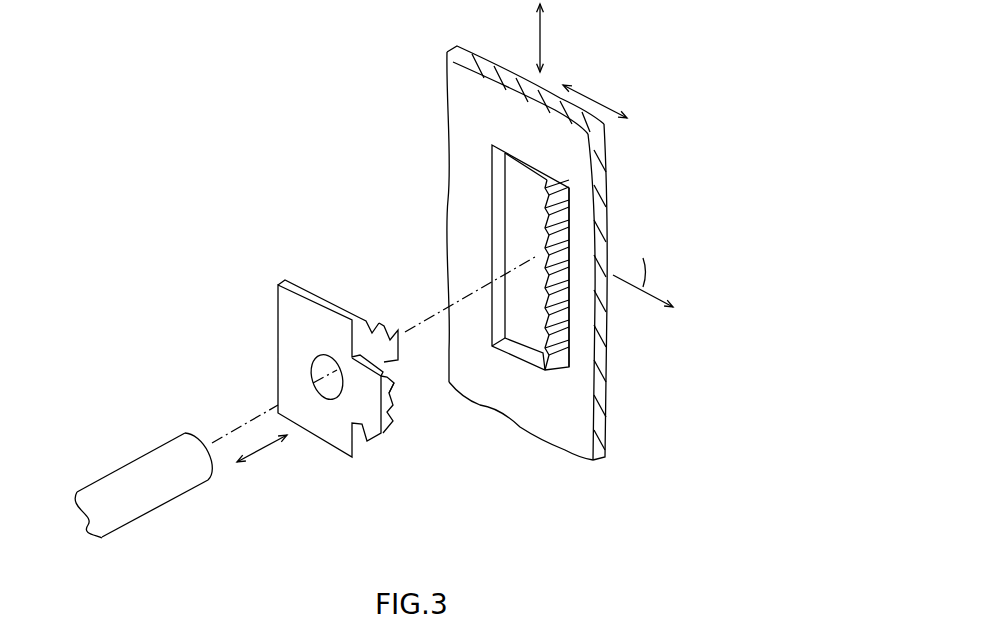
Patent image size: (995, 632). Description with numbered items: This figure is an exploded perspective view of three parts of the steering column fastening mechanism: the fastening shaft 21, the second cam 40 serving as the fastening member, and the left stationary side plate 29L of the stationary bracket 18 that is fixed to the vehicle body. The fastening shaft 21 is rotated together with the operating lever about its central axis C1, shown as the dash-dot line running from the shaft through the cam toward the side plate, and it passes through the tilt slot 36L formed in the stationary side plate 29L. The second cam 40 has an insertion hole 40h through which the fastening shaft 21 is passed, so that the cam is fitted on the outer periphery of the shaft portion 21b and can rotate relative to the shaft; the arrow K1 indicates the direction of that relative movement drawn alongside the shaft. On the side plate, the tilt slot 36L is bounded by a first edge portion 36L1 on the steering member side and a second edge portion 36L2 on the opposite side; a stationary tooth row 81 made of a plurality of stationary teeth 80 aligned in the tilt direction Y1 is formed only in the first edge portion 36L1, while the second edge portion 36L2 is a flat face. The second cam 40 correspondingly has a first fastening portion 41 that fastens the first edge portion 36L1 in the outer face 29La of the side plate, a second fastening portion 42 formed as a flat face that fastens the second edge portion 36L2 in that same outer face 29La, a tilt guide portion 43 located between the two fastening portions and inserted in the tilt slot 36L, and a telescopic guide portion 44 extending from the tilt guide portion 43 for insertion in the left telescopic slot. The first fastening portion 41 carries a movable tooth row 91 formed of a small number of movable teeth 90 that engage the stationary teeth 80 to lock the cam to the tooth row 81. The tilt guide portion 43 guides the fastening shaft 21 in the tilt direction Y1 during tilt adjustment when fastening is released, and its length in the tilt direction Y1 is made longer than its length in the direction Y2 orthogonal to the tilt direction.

The stationary bracket 18 is at (561, 251).
The left stationary side plate 29L is at (480, 256).
The outer face 29La is at (468, 103).
The tilt slot 36L is at (523, 261).
The first edge portion 36L1 is at (578, 265).
The second edge portion 36L2 is at (487, 205).
The stationary teeth 80 is at (583, 278).
The stationary tooth row 81 is at (543, 275).
The second cam 40 is at (334, 343).
The insertion hole 40h is at (323, 367).
The first fastening portion 41 is at (378, 358).
The second fastening portion 42 is at (304, 282).
The tilt guide portion 43 is at (369, 316).
The telescopic guide portion 44 is at (388, 330).
The movable teeth 90 is at (416, 410).
The movable tooth row 91 is at (393, 387).
The fastening shaft 21 is at (143, 485).
The shaft portion 21b is at (162, 490).
The central axis C1 is at (227, 435).
The direction K1 is at (264, 462).
The tilt direction Y1 is at (540, 37).
The direction orthogonal to the tilt direction Y2 is at (597, 100).